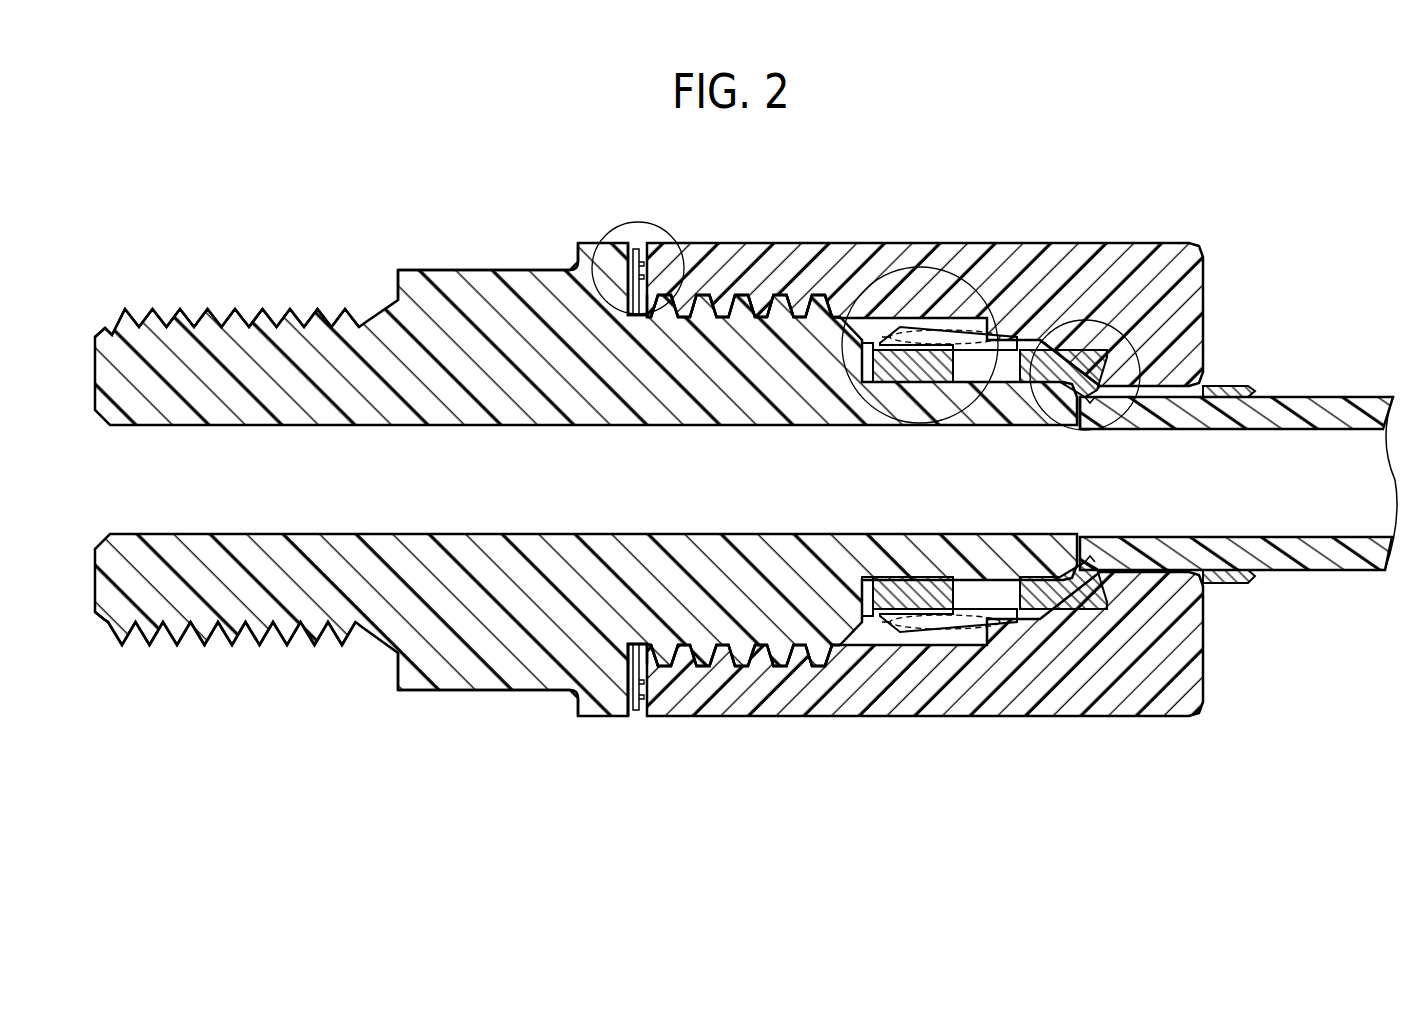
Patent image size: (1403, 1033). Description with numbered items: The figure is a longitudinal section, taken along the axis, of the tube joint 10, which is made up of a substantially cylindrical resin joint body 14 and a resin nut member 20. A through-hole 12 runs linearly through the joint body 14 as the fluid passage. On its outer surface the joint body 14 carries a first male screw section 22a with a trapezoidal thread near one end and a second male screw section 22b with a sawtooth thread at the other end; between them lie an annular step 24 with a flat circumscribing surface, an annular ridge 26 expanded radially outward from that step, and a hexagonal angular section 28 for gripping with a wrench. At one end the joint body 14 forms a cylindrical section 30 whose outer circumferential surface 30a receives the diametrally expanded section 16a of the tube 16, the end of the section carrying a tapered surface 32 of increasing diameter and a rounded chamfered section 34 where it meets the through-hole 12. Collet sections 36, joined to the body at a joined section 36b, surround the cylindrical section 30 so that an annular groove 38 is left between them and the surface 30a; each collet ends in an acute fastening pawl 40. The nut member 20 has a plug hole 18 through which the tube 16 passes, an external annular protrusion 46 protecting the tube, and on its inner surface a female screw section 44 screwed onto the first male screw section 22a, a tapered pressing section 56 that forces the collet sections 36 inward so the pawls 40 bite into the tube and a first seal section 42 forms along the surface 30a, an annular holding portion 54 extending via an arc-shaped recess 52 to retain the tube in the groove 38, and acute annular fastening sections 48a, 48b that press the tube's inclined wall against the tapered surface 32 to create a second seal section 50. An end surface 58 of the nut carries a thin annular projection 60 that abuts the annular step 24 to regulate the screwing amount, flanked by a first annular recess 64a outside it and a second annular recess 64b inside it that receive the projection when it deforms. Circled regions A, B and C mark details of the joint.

The tube joint 10 is at (1146, 150).
The through-hole 12 is at (350, 531).
The joint body 14 is at (455, 692).
The tube 16 is at (1326, 394).
The diametrally expanded section 16a is at (1075, 398).
The plug hole 18 is at (1225, 392).
The nut member 20 is at (1040, 245).
The first male screw section 22a is at (742, 300).
The second male screw section 22b is at (247, 320).
The annular step 24 is at (650, 290).
The annular ridge 26 is at (575, 243).
The angular section 28 is at (455, 270).
The cylindrical section 30 is at (990, 385).
The outer circumferential surface 30a is at (1012, 337).
The tapered surface 32 is at (1105, 345).
The chamfered section 34 is at (1050, 383).
The collet sections 36 is at (948, 332).
The joined section 36b is at (858, 330).
The annular groove 38 is at (868, 385).
The fastening pawl 40 is at (940, 384).
The first seal section 42 is at (932, 383).
The female screw section 44 is at (775, 668).
The annular protrusion 46 is at (1230, 585).
The annular fastening section 48a is at (1090, 402).
The annular fastening section 48b is at (1099, 398).
The second seal section 50 is at (1088, 570).
The recess 52 is at (1083, 612).
The annular holding portion 54 is at (1043, 617).
The pressing section 56 is at (948, 630).
The end surface 58 is at (628, 690).
The annular projection 60 is at (636, 712).
The first annular recess 64a is at (648, 700).
The second annular recess 64b is at (648, 716).
The detail region A is at (985, 420).
The detail region B is at (1046, 424).
The detail region C is at (640, 222).